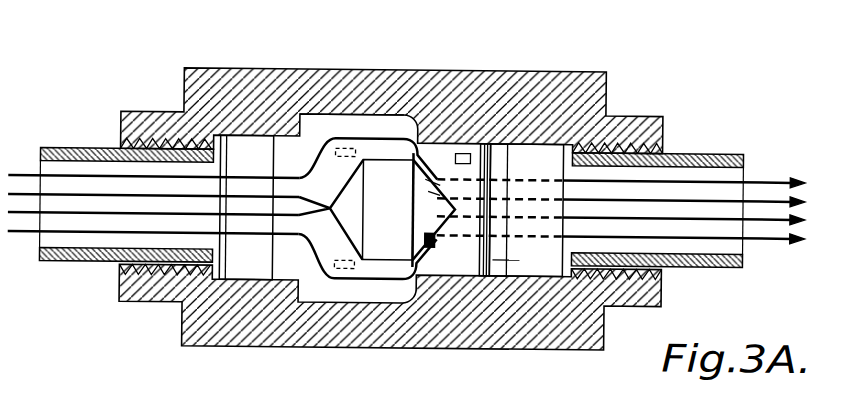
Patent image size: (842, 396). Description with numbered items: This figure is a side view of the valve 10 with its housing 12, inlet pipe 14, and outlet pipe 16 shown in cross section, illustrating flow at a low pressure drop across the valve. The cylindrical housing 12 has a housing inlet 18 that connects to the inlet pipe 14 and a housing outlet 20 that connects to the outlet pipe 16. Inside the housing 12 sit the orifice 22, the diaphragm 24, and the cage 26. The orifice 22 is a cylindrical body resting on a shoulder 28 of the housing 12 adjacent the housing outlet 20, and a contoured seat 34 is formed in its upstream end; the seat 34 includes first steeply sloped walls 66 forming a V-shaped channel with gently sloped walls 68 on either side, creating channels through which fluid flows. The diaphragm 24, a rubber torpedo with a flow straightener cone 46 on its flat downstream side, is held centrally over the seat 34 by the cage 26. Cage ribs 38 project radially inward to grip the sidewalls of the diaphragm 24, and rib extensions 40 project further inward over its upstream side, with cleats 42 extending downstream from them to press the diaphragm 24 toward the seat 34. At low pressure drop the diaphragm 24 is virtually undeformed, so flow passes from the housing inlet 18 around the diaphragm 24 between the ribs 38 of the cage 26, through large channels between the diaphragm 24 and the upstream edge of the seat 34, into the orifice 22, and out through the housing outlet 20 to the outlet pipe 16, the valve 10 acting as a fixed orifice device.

The valve 10 is at (90, 54).
The housing 12 is at (577, 75).
The inlet pipe 14 is at (68, 262).
The outlet pipe 16 is at (710, 151).
The housing inlet 18 is at (143, 290).
The housing outlet 20 is at (633, 123).
The orifice 22 is at (487, 146).
The diaphragm 24 is at (383, 172).
The cage 26 is at (363, 120).
The shoulder 28 is at (500, 256).
The contoured seat 34 is at (433, 179).
The cage ribs 38 is at (336, 146).
The rib extensions 40 is at (323, 158).
The cleats 42 is at (350, 148).
The flow straightener cone 46 is at (430, 237).
The first steeply sloped walls 66 is at (507, 139).
The gently sloped walls 68 is at (465, 156).